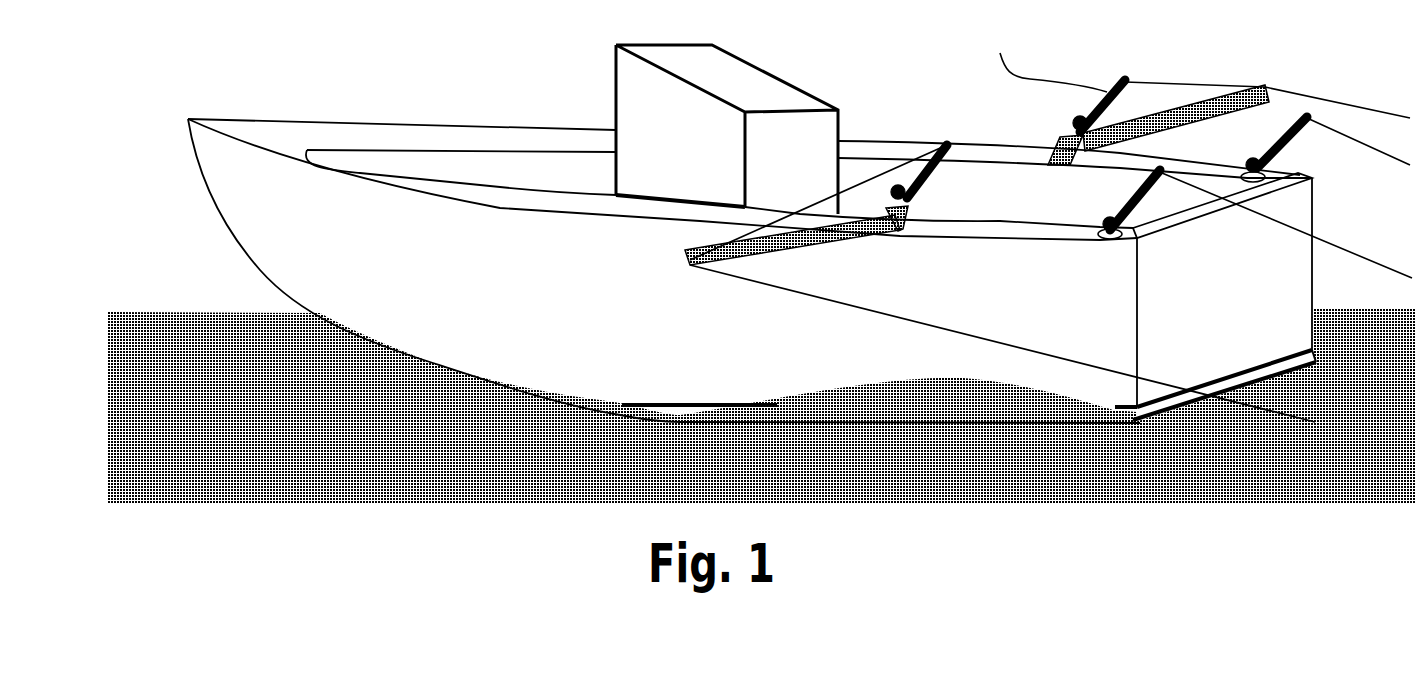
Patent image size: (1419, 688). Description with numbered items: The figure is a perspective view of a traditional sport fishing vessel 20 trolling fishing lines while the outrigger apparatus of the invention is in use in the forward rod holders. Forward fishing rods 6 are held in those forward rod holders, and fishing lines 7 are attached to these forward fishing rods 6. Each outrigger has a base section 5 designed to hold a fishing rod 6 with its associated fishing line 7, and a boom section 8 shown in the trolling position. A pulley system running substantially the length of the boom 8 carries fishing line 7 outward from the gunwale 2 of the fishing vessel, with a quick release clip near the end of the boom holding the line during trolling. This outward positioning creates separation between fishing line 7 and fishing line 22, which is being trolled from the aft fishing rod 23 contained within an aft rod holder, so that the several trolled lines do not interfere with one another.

The fishing vessel 20 is at (390, 150).
The gunwale 2 is at (873, 150).
The base section 5 is at (1052, 140).
The forward fishing rod 6 is at (946, 143).
The fishing line 7 is at (1308, 97).
The boom section 8 is at (797, 247).
The fishing line 22 is at (1345, 248).
The fishing rod 23 is at (1142, 197).